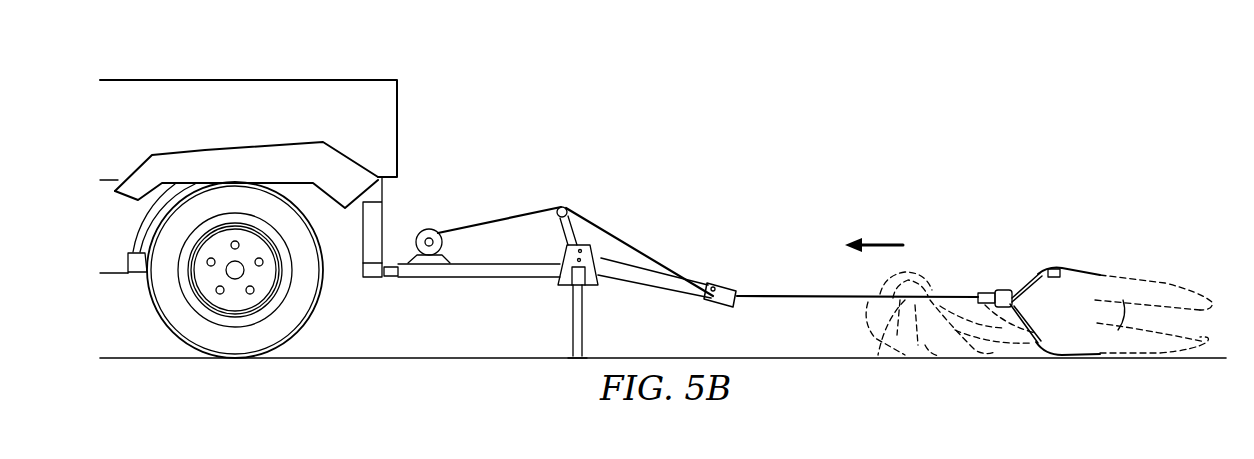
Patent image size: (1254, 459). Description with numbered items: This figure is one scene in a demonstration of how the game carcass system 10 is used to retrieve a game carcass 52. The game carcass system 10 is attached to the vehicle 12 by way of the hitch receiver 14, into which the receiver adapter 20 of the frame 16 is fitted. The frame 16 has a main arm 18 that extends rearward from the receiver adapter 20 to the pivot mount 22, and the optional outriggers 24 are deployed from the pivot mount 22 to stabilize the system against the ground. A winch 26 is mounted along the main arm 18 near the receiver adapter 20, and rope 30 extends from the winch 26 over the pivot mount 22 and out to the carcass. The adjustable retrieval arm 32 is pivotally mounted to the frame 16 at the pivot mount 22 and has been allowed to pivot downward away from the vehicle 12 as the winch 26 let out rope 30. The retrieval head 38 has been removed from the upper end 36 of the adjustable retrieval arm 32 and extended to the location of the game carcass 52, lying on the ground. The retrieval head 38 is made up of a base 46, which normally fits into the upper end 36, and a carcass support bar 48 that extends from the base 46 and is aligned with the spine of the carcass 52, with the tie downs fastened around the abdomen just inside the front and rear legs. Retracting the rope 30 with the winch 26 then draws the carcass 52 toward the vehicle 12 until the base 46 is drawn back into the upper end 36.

The game carcass system 10 is at (613, 161).
The vehicle 12 is at (250, 80).
The hitch receiver 14 is at (367, 279).
The frame 16 is at (496, 287).
The main arm 18 is at (531, 279).
The receiver adapter 20 is at (392, 278).
The pivot mount 22 is at (592, 286).
The outriggers 24 is at (572, 333).
The winch 26 is at (429, 229).
The rope 30 is at (513, 225).
The adjustable retrieval arm 32 is at (676, 296).
The upper end 36 is at (722, 310).
The retrieval head 38 is at (1010, 250).
The base 46 is at (999, 291).
The carcass support bar 48 is at (1030, 270).
The game carcass 52 is at (1120, 277).